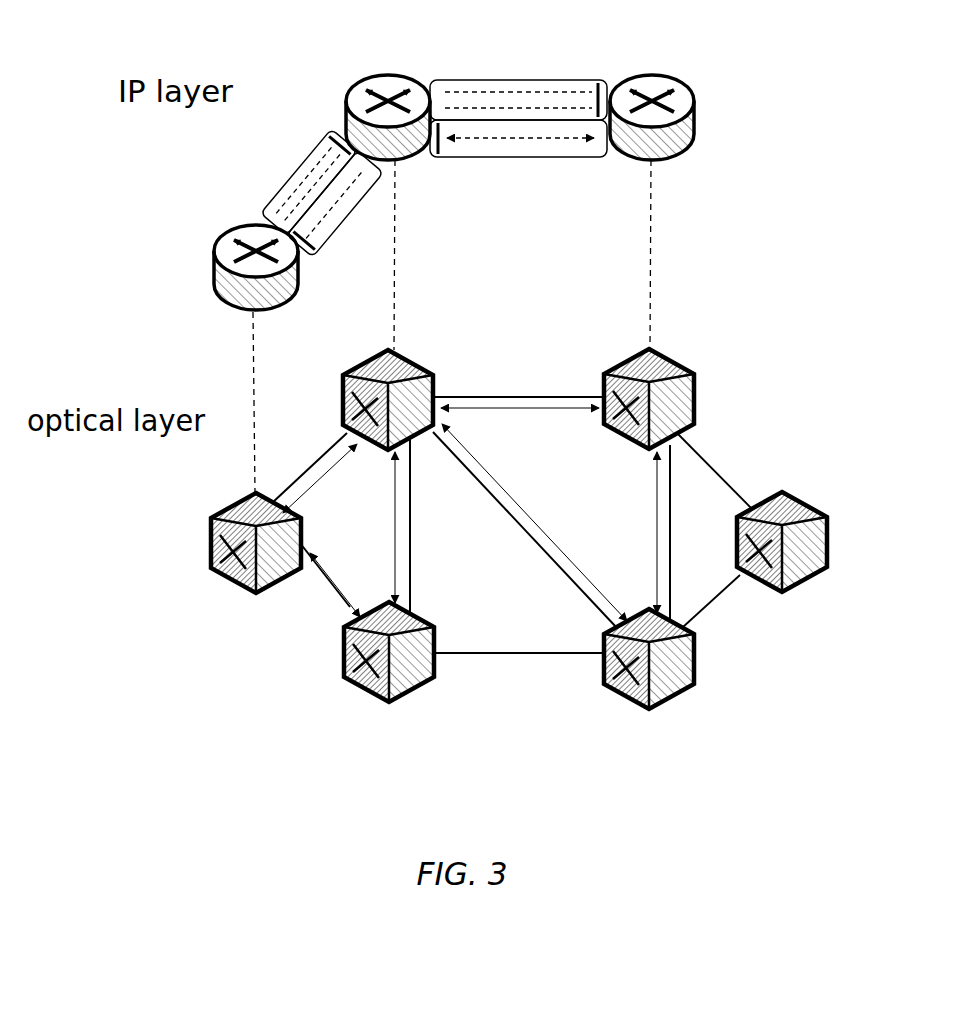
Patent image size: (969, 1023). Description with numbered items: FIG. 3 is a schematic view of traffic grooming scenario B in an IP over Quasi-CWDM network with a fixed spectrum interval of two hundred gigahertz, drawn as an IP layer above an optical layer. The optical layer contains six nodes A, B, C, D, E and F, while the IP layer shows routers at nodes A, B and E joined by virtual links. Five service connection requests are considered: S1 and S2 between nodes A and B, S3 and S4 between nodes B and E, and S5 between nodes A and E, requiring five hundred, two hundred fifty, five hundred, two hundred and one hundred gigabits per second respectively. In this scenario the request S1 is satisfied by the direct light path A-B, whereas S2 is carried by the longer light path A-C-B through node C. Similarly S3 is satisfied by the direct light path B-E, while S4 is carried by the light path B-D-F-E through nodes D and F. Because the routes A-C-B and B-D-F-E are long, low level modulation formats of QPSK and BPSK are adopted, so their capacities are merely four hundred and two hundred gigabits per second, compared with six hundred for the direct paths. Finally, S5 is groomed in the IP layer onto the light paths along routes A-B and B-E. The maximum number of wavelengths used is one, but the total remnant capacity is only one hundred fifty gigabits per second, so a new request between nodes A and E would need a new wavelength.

The node A is at (226, 414).
The node B is at (409, 231).
The node C is at (400, 673).
The node D is at (670, 677).
The node E is at (672, 239).
The node F is at (806, 542).
The service connection request S1 is at (317, 468).
The service connection request S2 is at (392, 540).
The service connection request S3 is at (495, 408).
The service connection request S4 is at (675, 525).
The service connection request S5 is at (500, 92).